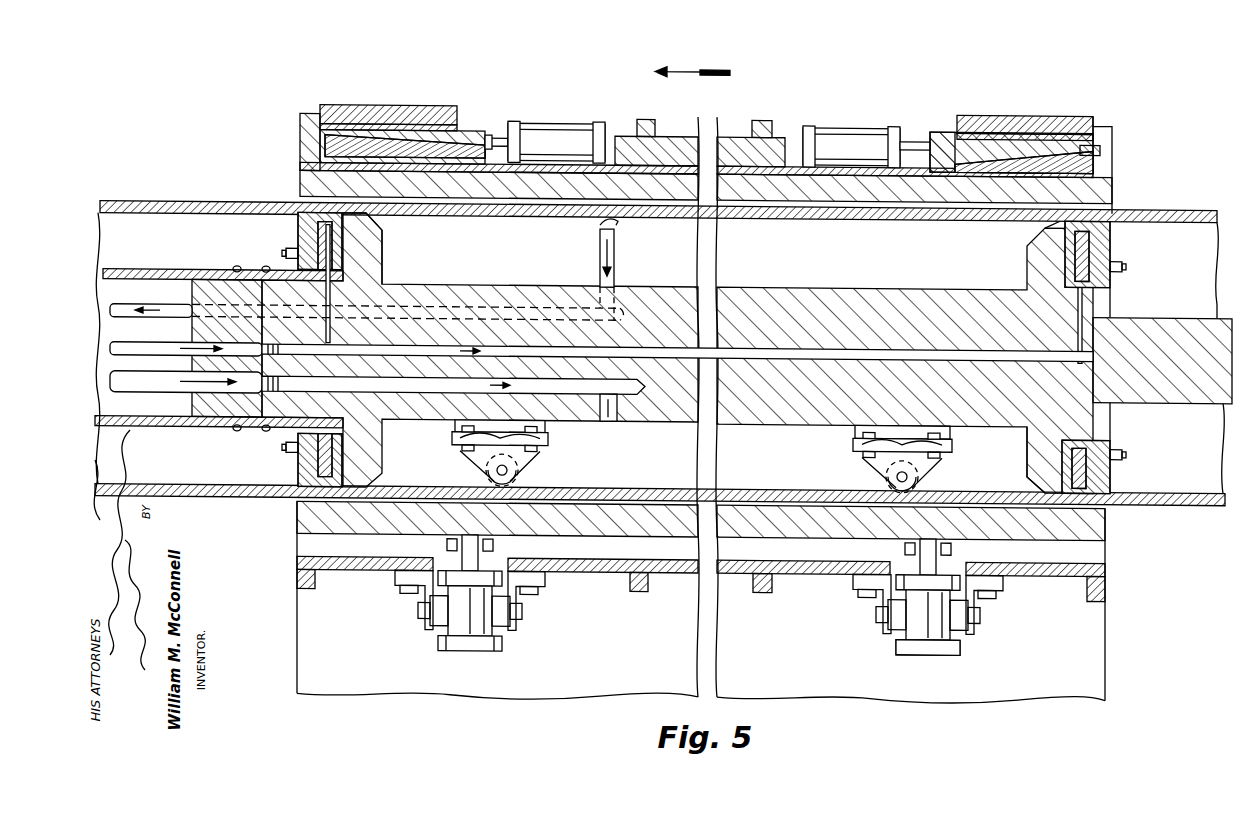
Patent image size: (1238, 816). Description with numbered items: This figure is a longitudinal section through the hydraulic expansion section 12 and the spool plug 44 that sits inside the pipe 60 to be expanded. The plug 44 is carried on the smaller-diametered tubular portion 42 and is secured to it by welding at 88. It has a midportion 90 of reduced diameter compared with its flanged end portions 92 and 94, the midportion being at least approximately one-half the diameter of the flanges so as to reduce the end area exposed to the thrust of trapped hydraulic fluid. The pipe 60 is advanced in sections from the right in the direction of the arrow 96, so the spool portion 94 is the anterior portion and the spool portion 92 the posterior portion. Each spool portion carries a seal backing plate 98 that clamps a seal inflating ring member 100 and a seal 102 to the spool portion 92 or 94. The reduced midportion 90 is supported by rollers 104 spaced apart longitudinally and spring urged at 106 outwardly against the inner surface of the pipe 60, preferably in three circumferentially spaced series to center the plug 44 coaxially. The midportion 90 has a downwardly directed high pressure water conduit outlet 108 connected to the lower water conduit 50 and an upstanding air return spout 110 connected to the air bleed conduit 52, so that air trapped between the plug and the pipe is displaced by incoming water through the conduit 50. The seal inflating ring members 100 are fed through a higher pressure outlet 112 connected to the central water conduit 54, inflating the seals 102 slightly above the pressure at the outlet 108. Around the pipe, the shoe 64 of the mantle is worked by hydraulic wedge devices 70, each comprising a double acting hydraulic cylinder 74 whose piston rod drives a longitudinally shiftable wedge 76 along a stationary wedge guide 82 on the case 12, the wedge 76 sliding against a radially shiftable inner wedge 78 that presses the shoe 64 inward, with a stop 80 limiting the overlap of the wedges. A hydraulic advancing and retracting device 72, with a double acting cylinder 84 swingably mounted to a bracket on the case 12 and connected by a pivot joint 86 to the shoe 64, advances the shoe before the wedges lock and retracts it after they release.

The hydraulic expansion section 12 is at (1024, 113).
The tubular portion 42 is at (160, 274).
The spool plug 44 is at (1143, 316).
The lower water conduit 50 is at (110, 387).
The air bleed conduit 52 is at (497, 307).
The central water conduit 54 is at (110, 353).
The pipe 60 is at (480, 218).
The shoe 64 is at (1100, 185).
The hydraulic wedge device 70 is at (564, 123).
The hydraulic advancing and retracting device 72 is at (955, 653).
The double acting hydraulic cylinder 74 is at (853, 128).
The longitudinally shiftable wedge 76 is at (935, 133).
The radially shiftable inner wedge 78 is at (1093, 160).
The stop 80 is at (1100, 147).
The stationary wedge guide 82 is at (1080, 120).
The double acting cylinder 84 is at (903, 650).
The pivot joint 86 is at (960, 552).
The welding 88 is at (266, 272).
The midportion 90 is at (805, 291).
The posterior spool portion 92 is at (382, 457).
The anterior spool portion 94 is at (1030, 464).
The arrow 96 is at (674, 66).
The seal backing plate 98 is at (1110, 245).
The seal inflating ring member 100 is at (1075, 265).
The seal 102 is at (1060, 228).
The rollers 104 is at (522, 484).
The spring 106 is at (548, 443).
The water conduit outlet 108 is at (618, 422).
The air return spout 110 is at (614, 264).
The higher pressure outlet 112 is at (340, 284).